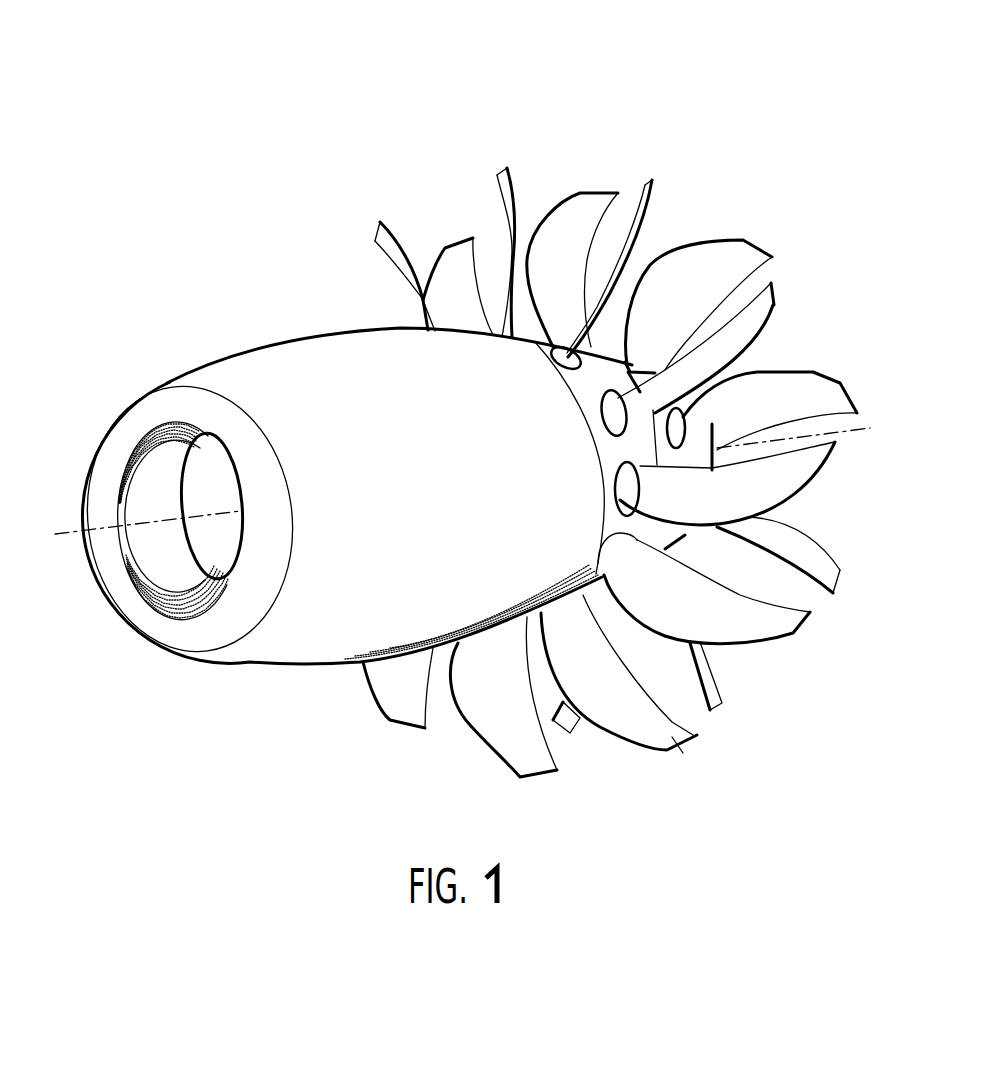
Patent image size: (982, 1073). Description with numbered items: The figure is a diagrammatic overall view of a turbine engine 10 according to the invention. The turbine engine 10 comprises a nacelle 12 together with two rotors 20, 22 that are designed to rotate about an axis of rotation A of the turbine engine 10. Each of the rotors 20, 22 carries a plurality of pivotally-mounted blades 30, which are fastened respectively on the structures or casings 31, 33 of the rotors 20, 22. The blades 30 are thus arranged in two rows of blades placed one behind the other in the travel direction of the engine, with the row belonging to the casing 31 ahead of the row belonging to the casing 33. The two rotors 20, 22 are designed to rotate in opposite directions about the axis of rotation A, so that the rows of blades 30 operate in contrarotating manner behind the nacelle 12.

The turbine engine 10 is at (258, 85).
The nacelle 12 is at (200, 368).
The rotor 20 is at (458, 217).
The rotor 22 is at (688, 215).
The pivotally-mounted blades 30 is at (790, 620).
The casing 31 is at (610, 508).
The casing 33 is at (667, 549).
The axis of rotation A is at (56, 534).